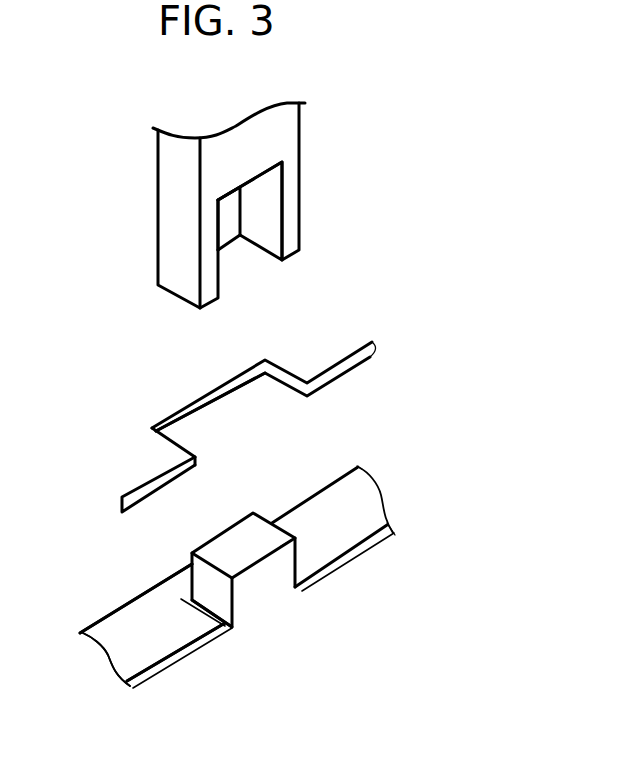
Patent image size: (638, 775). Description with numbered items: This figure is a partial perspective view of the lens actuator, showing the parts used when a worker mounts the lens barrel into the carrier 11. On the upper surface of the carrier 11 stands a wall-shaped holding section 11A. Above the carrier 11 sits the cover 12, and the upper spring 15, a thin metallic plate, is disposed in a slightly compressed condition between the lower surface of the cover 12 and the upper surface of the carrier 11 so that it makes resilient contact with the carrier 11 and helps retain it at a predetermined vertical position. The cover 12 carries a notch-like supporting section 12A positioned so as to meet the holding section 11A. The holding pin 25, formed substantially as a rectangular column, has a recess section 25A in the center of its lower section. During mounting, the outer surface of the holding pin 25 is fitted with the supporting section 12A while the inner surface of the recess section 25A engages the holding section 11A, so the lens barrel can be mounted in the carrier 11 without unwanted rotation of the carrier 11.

The holding pin 25 is at (282, 142).
The recess section 25A is at (265, 216).
The cover 12 is at (125, 432).
The supporting section 12A is at (243, 418).
The carrier 11 is at (278, 613).
The holding section 11A is at (255, 542).
The upper spring 15 is at (135, 640).